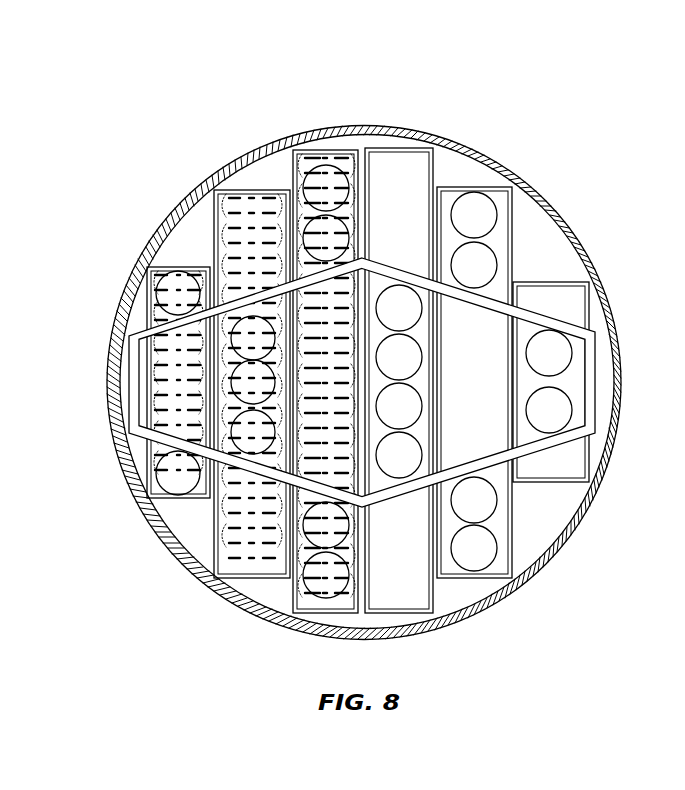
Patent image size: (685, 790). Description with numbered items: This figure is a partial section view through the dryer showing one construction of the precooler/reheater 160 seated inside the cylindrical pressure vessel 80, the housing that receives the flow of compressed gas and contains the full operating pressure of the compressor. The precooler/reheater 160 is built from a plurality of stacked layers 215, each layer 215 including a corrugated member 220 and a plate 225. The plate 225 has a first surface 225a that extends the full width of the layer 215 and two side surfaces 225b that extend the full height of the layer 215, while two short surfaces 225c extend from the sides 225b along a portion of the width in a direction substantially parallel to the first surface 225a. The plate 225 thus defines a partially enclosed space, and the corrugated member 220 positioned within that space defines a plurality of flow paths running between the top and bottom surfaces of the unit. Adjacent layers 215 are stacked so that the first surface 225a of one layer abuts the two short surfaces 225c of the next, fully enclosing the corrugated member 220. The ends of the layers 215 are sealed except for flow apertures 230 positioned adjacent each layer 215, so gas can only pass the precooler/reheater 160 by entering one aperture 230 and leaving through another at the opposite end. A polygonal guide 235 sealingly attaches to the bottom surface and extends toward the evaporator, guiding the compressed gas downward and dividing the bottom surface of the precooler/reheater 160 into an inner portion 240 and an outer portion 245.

The pressure vessel 80 is at (577, 238).
The precooler/reheater 160 is at (188, 583).
The stacked layer 215 is at (345, 140).
The corrugated member 220 is at (270, 196).
The plate 225 is at (208, 212).
The first surface 225a is at (283, 513).
The side surfaces 225b is at (319, 149).
The short surfaces 225c is at (360, 180).
The flow apertures 230 is at (497, 228).
The polygonal guide 235 is at (548, 448).
The inner portion 240 is at (175, 423).
The outer portion 245 is at (226, 265).